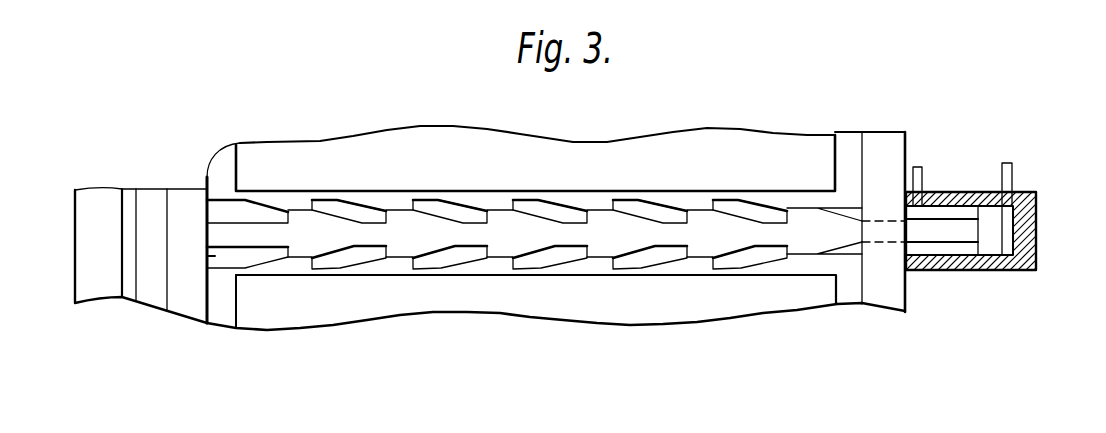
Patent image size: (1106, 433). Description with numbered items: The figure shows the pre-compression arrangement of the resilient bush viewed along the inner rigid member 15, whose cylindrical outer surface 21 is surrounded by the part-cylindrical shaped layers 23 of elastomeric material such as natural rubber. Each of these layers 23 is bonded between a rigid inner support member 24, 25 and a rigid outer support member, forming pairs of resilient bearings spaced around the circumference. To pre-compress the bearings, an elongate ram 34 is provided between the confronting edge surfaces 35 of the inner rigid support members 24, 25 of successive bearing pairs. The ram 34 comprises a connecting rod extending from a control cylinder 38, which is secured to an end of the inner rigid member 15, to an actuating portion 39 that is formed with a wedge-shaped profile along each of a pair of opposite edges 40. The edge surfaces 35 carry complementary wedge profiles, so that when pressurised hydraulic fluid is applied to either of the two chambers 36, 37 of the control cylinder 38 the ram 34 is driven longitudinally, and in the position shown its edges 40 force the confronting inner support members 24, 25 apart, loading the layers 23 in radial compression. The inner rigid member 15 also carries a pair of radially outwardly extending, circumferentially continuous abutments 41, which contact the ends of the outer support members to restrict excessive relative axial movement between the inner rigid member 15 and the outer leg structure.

The inner rigid member 15 is at (149, 289).
The cylindrical outer surface 21 is at (221, 207).
The part-cylindrical shaped layers 23 is at (360, 148).
The rigid inner support member 24 is at (298, 200).
The rigid inner support member 25 is at (223, 313).
The elongate ram 34 is at (802, 256).
The confronting edge surfaces 35 is at (760, 207).
The chamber 36 is at (943, 248).
The chamber 37 is at (1008, 232).
The control cylinder 38 is at (1025, 208).
The actuating portion 39 is at (500, 235).
The opposite edges 40 is at (440, 217).
The abutments 41 is at (185, 188).